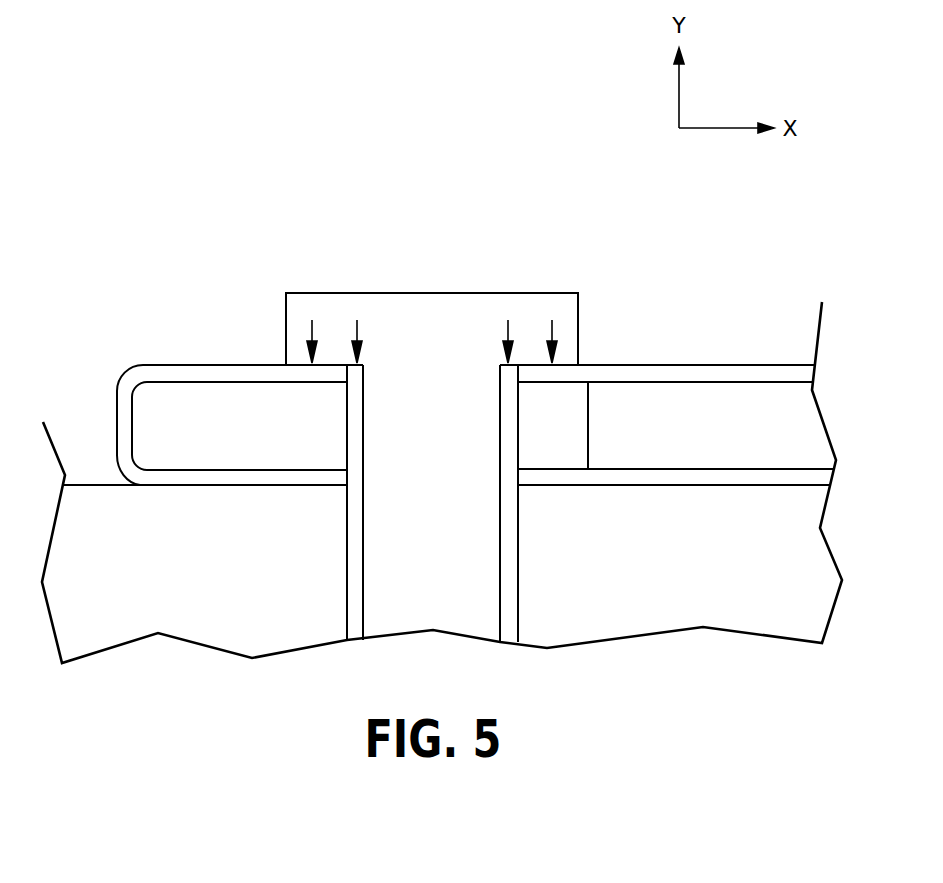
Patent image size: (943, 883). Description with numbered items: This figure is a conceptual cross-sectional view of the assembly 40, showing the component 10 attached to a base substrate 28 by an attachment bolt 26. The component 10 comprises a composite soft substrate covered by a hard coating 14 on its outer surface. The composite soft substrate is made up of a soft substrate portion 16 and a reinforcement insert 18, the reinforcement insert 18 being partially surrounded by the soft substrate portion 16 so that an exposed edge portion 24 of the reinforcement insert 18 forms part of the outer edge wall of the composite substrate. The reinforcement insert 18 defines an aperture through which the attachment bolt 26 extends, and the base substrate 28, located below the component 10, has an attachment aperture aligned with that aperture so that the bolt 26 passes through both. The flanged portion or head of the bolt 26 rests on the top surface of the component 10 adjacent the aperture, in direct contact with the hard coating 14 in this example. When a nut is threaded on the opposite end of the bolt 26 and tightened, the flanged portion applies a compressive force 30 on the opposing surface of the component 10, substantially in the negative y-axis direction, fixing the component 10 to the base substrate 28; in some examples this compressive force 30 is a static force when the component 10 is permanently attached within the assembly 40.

The component 10 is at (655, 273).
The hard coating 14 is at (237, 375).
The soft substrate portion 16 is at (660, 436).
The reinforcement insert 18 is at (213, 435).
The exposed edge portion 24 is at (117, 410).
The attachment bolt 26 is at (417, 305).
The base substrate 28 is at (631, 563).
The compressive force 30 is at (432, 333).
The assembly 40 is at (178, 179).